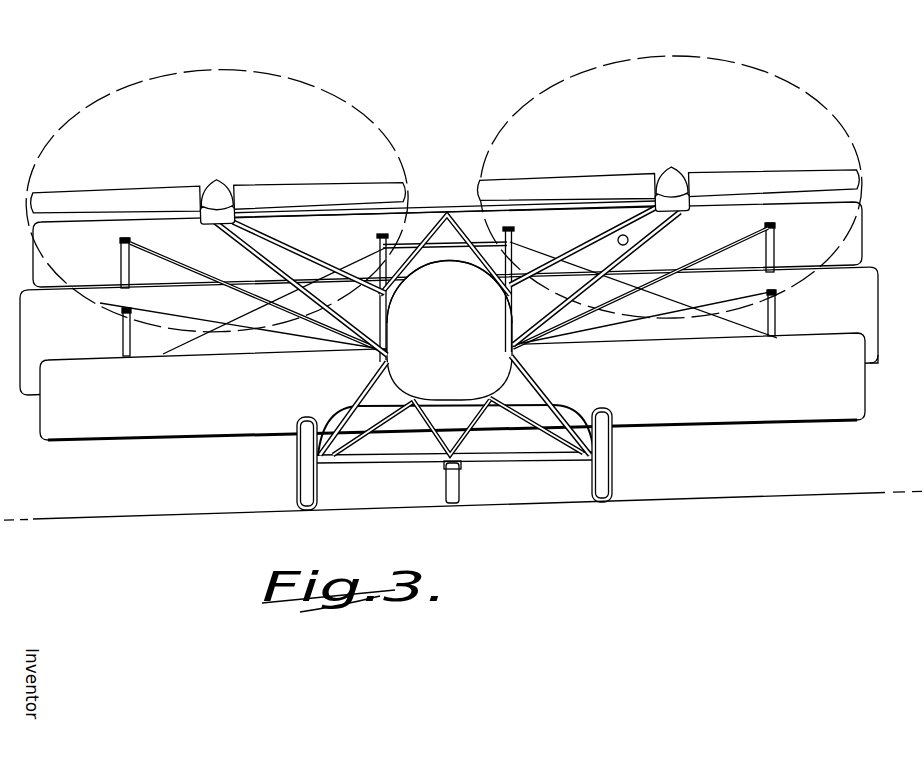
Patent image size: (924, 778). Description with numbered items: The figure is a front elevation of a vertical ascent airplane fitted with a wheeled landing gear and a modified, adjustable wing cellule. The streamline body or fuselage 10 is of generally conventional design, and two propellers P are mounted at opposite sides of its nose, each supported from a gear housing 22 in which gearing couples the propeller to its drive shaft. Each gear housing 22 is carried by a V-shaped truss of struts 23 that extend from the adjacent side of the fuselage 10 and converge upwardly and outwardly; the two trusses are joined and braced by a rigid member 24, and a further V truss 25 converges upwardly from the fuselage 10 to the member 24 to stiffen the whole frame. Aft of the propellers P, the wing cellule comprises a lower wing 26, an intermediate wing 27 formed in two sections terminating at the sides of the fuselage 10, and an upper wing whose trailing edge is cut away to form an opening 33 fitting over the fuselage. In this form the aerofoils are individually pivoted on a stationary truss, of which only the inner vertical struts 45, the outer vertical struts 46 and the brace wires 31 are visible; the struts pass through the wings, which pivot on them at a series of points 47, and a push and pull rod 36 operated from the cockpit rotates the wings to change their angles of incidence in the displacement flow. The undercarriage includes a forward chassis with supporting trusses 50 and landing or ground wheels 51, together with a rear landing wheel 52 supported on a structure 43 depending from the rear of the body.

The fuselage 10 is at (449, 331).
The gear housing 22 is at (207, 225).
The struts 23 is at (528, 284).
The rigid member 24 is at (404, 240).
The V truss 25 is at (417, 262).
The lower wing 26 is at (855, 232).
The intermediate wing 27 is at (629, 242).
The brace wires 31 is at (583, 322).
The opening 33 is at (373, 272).
The push and pull rod 36 is at (872, 355).
The structure 43 is at (456, 415).
The inner vertical struts 45 is at (522, 241).
The outer vertical struts 46 is at (776, 228).
The pivot points 47 is at (487, 238).
The supporting trusses 50 is at (383, 420).
The landing wheels 51 is at (297, 487).
The landing wheel 52 is at (461, 486).
The propellers P is at (340, 189).